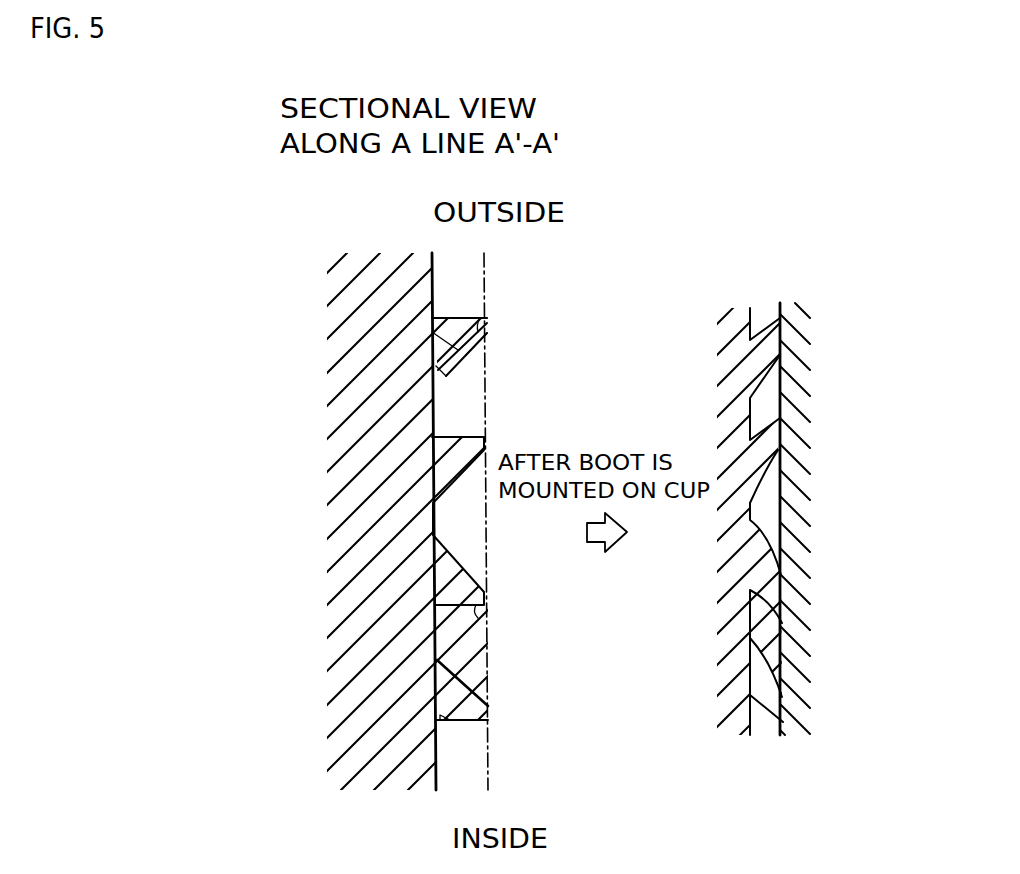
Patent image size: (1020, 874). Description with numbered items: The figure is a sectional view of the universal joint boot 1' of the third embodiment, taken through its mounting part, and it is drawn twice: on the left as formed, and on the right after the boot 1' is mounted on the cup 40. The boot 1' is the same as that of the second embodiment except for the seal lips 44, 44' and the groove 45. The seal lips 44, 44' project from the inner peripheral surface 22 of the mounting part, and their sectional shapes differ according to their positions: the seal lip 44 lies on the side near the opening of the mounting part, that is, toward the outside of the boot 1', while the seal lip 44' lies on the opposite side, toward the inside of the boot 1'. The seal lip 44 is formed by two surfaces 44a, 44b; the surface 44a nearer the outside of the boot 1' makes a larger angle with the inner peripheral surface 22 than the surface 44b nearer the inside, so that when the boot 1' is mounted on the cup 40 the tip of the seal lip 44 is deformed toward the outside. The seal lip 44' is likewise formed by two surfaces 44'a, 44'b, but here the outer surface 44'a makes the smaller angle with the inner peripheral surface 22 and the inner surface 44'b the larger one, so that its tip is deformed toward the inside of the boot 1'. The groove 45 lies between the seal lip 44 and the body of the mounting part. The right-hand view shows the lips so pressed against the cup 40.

The inner peripheral surface 22 is at (433, 292).
The seal lip 44 is at (338, 354).
The surface 44a is at (478, 308).
The surface 44b is at (458, 352).
The groove 45 is at (457, 403).
The seal lip 44' is at (343, 702).
The surface 44'a is at (530, 664).
The surface 44'b is at (546, 735).
The boot 1' is at (455, 521).
The cup 40 is at (815, 380).